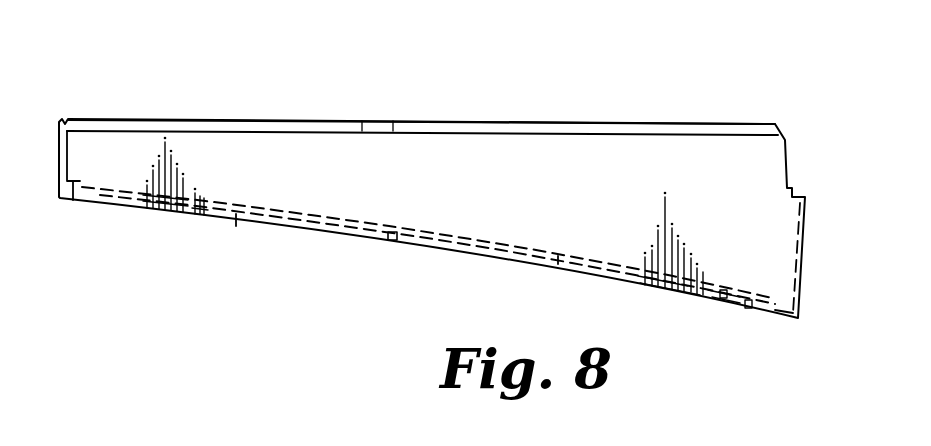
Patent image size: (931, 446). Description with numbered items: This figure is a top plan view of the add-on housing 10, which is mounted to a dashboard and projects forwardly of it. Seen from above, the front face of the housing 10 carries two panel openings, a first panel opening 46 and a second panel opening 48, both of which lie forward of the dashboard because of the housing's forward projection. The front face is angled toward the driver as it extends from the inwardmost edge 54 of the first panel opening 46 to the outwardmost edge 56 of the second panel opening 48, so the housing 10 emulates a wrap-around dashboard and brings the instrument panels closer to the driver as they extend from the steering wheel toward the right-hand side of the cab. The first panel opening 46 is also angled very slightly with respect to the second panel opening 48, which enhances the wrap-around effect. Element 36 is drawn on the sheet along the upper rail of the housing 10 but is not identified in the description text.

The add-on housing 10 is at (798, 168).
The top rail 36 is at (310, 121).
The first panel opening 46 is at (236, 230).
The second panel opening 48 is at (553, 270).
The inwardmost edge of the first panel opening 54 is at (70, 201).
The outwardmost edge of the second panel opening 56 is at (782, 314).